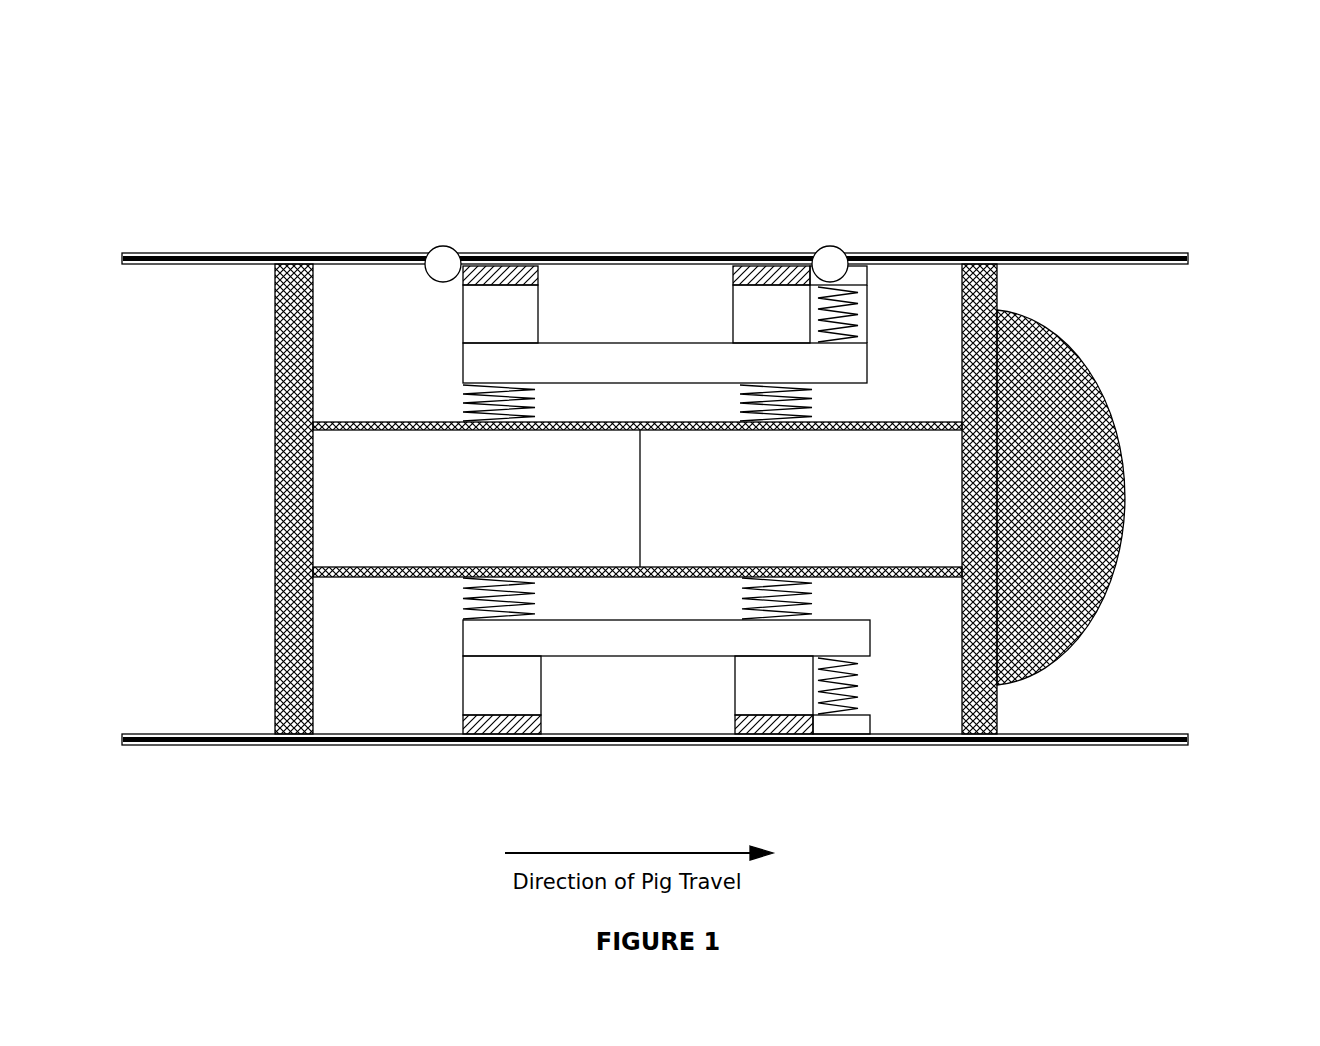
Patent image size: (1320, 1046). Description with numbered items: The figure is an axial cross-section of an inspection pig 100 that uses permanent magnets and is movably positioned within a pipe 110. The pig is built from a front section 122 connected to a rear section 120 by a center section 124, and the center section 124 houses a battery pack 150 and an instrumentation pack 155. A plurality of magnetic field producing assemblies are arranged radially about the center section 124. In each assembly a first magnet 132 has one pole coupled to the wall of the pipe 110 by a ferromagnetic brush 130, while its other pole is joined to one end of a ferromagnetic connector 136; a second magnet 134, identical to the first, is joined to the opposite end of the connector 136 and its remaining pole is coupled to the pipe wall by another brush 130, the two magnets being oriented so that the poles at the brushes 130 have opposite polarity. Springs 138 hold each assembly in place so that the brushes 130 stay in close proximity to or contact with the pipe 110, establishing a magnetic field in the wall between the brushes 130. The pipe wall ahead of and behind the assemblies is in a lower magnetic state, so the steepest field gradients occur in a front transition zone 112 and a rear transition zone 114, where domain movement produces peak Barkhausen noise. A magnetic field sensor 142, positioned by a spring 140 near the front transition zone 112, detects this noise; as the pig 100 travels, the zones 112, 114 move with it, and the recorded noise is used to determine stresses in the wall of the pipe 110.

The inspection pig 100 is at (123, 139).
The pipe 110 is at (1008, 246).
The front transition zone 112 is at (845, 252).
The rear transition zone 114 is at (443, 264).
The rear section 120 is at (255, 422).
The front section 122 is at (1133, 417).
The center section 124 is at (848, 577).
The ferromagnetic brush 130 is at (505, 272).
The first magnet 132 is at (452, 323).
The second magnet 134 is at (733, 305).
The ferromagnetic connector 136 is at (627, 343).
The springs 138 is at (452, 403).
The spring 140 is at (868, 310).
The magnetic field sensor 142 is at (867, 270).
The battery pack 150 is at (430, 530).
The instrumentation pack 155 is at (833, 535).